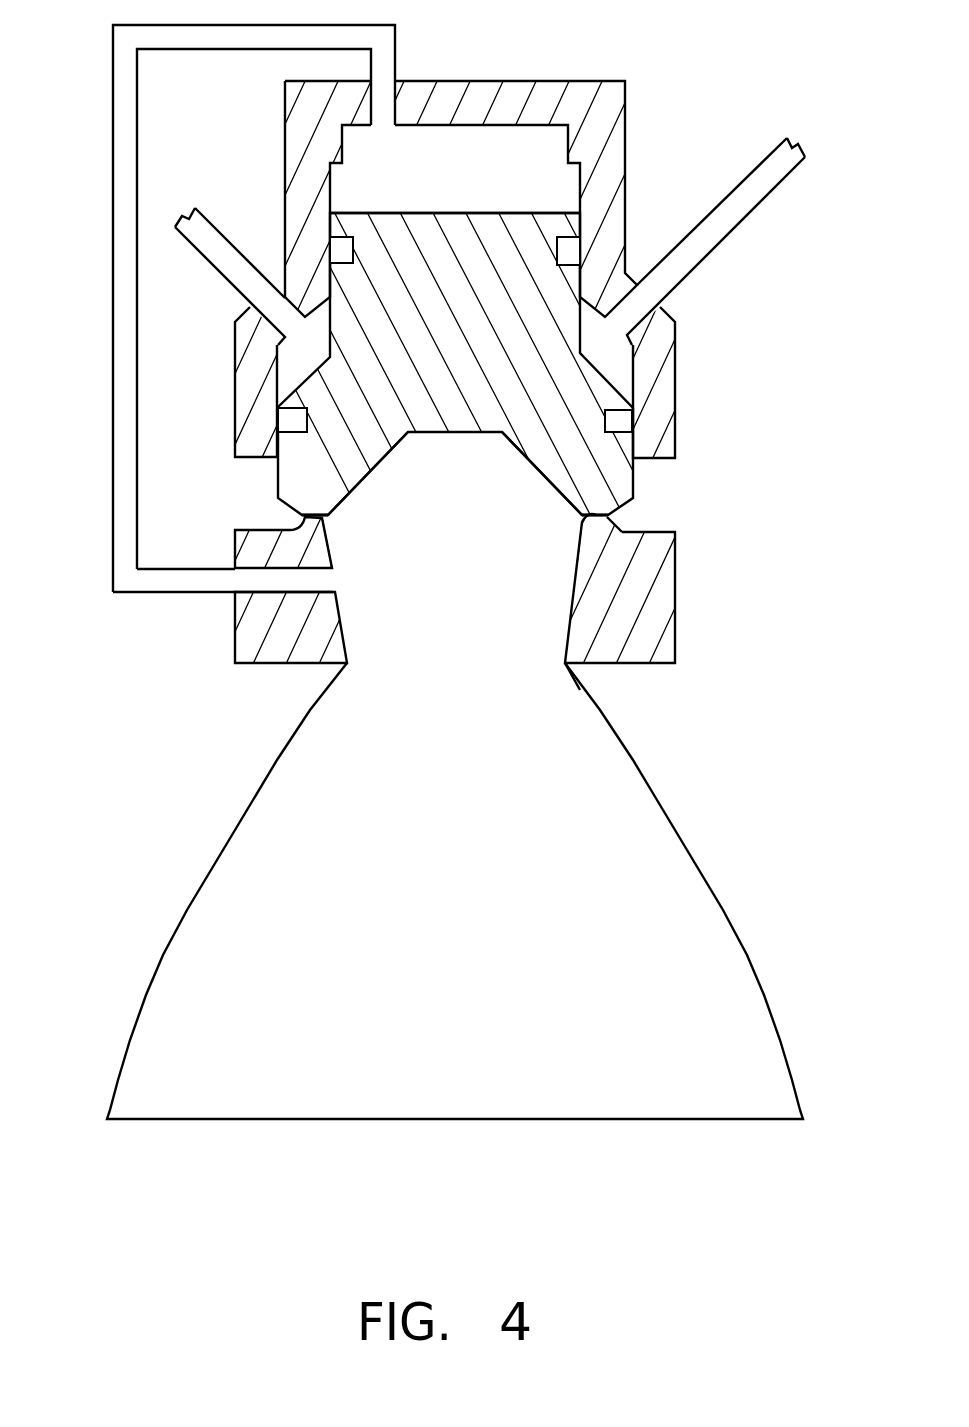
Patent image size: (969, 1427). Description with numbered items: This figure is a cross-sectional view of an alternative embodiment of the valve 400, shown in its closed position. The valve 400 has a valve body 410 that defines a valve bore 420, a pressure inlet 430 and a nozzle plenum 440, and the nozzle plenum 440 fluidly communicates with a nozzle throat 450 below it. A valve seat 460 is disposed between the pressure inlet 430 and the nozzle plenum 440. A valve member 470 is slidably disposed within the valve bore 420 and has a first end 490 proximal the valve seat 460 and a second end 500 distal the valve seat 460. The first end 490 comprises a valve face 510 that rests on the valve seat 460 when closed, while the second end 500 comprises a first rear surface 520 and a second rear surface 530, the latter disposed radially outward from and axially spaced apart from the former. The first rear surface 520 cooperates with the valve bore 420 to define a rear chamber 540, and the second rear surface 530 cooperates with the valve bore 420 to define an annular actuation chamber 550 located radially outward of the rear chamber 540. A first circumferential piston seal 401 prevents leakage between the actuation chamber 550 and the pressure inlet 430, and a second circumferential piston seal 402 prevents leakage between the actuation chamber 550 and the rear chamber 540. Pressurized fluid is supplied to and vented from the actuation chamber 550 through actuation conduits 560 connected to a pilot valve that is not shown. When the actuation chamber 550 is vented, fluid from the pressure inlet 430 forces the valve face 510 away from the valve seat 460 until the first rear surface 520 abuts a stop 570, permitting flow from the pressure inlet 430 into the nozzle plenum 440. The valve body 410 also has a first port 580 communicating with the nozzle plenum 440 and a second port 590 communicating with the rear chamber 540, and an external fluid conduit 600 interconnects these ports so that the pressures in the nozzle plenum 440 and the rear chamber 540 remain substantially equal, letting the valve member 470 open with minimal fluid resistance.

The valve 400 is at (674, 64).
The first circumferential piston seal 401 is at (618, 420).
The second circumferential piston seal 402 is at (340, 248).
The valve body 410 is at (457, 80).
The valve bore 420 is at (562, 218).
The pressure inlet 430 is at (273, 511).
The nozzle plenum 440 is at (492, 641).
The nozzle throat 450 is at (565, 663).
The valve seat 460 is at (593, 515).
The valve member 470 is at (518, 388).
The first end 490 is at (352, 443).
The second end 500 is at (513, 287).
The valve face 510 is at (583, 523).
The first rear surface 520 is at (358, 213).
The second rear surface 530 is at (600, 368).
The rear chamber 540 is at (495, 161).
The annular actuation chamber 550 is at (305, 347).
The actuation conduits 560 is at (743, 200).
The stop 570 is at (585, 168).
The first port 580 is at (333, 580).
The second port 590 is at (385, 127).
The fluid conduit 600 is at (112, 190).